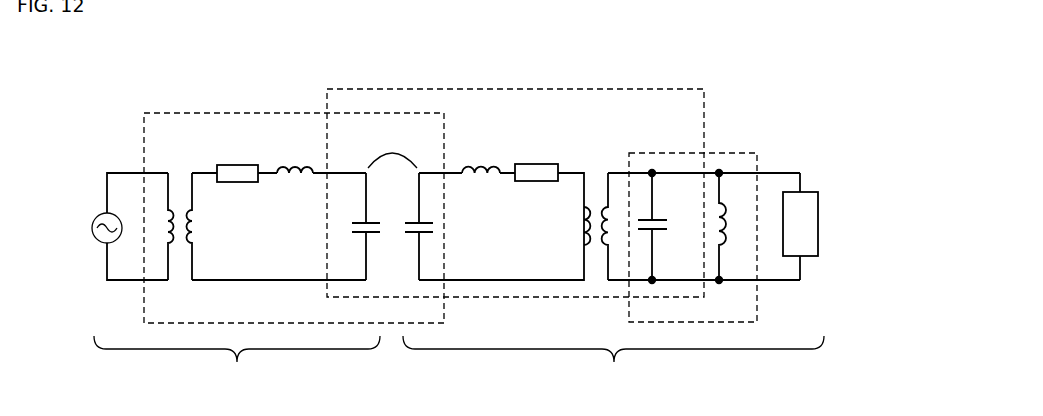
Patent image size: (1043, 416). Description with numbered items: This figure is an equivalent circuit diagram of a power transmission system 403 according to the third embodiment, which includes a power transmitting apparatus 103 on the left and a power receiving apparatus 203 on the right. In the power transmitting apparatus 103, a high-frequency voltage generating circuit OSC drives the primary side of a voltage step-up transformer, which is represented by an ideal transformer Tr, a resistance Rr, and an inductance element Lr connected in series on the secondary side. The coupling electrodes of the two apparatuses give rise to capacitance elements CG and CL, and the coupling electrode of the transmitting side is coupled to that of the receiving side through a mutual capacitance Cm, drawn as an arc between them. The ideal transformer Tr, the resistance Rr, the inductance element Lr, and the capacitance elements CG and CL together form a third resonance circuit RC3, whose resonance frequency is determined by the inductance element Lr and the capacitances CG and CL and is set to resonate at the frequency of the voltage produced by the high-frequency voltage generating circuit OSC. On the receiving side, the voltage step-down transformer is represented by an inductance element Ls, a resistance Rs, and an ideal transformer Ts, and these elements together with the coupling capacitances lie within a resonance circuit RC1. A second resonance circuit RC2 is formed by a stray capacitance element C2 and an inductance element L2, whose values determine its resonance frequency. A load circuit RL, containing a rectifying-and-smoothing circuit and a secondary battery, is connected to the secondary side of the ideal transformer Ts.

The power transmission system 403 is at (795, 43).
The power transmitting apparatus 103 is at (237, 365).
The power receiving apparatus 203 is at (613, 365).
The high-frequency voltage generating circuit OSC is at (106, 226).
The ideal transformer Tr is at (181, 172).
The resistance Rr is at (237, 162).
The inductance element Lr is at (295, 157).
The capacitance element CG is at (357, 226).
The capacitance element CL is at (412, 226).
The mutual capacitance Cm is at (392, 149).
The inductance element Ls is at (481, 156).
The resistance Rs is at (536, 160).
The ideal transformer Ts is at (597, 172).
The capacitance element C2 is at (666, 227).
The inductance element L2 is at (734, 227).
The load circuit RL is at (817, 192).
The resonance circuit RC1 is at (537, 89).
The second resonance circuit RC2 is at (757, 147).
The third resonance circuit RC3 is at (245, 112).